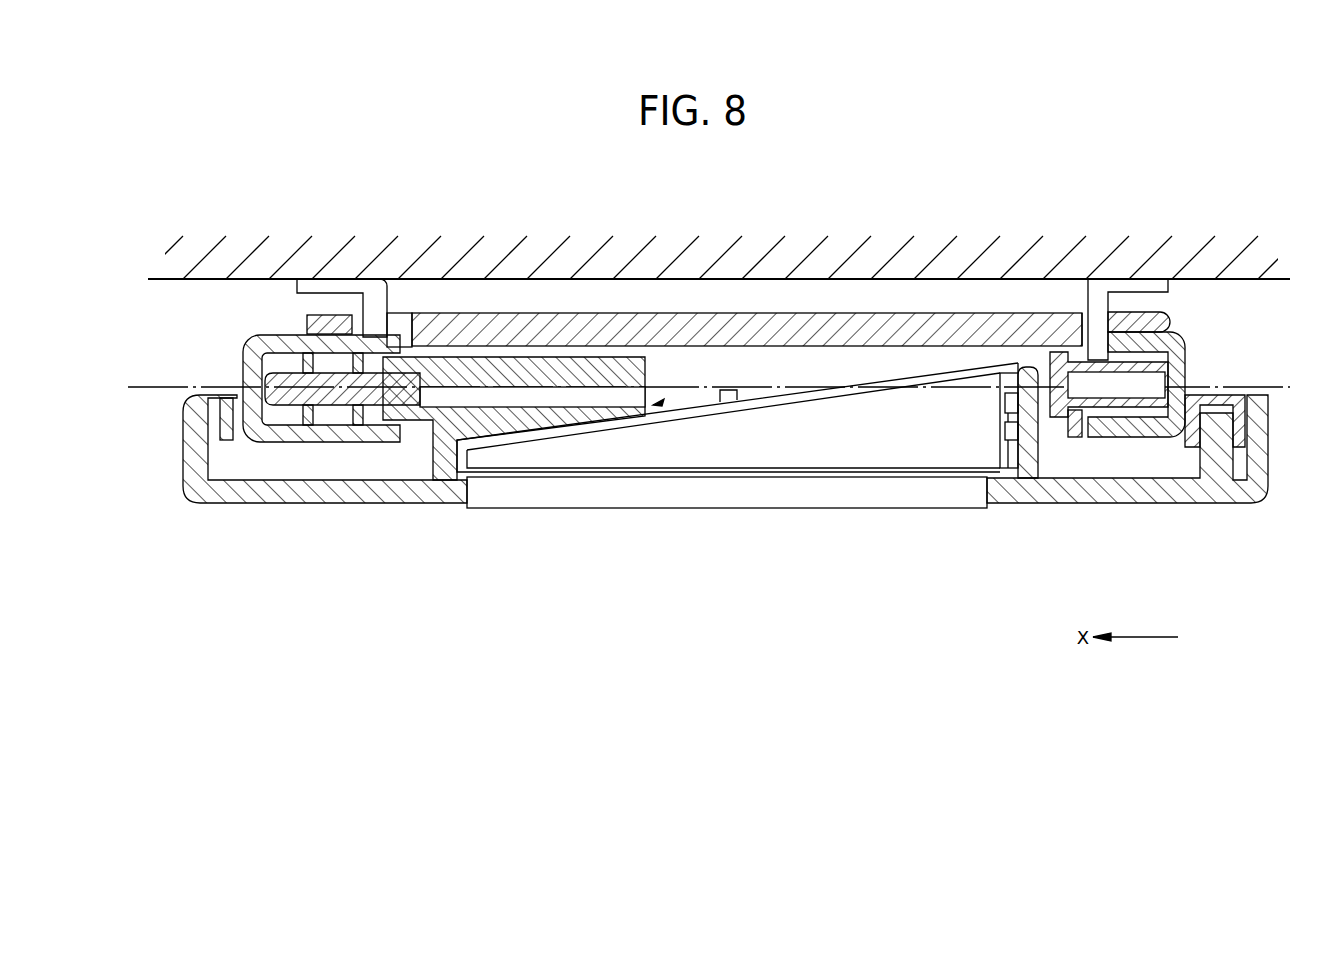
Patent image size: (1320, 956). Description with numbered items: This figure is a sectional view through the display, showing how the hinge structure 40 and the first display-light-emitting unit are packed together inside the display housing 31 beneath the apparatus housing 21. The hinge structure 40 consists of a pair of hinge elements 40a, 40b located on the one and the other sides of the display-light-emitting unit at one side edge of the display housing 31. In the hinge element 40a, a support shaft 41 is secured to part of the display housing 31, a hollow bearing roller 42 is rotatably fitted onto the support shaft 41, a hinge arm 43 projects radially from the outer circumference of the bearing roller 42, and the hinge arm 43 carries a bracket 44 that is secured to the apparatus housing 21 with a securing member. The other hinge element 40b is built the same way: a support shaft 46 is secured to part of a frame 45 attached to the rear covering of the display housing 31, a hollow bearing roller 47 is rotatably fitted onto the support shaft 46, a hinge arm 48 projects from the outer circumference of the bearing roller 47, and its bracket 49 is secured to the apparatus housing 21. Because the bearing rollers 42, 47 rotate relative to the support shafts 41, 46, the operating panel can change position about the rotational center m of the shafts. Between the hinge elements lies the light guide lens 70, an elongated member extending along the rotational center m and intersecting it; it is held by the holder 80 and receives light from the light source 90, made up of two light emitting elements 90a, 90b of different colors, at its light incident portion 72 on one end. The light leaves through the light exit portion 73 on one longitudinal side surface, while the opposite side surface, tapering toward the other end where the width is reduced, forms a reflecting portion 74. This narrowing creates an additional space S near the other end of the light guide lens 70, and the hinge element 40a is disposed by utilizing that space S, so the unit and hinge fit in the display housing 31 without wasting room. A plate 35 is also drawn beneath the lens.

The apparatus housing 21 is at (162, 283).
The display housing 31 is at (292, 503).
The bottom plate 35 is at (830, 508).
The hinge structure 40 is at (725, 446).
The hinge element 40a is at (358, 450).
The hinge element 40b is at (1100, 437).
The support shaft 41 is at (488, 367).
The bearing roller 42 is at (240, 359).
The hinge arm 43 is at (388, 302).
The bracket 44 is at (363, 294).
The frame 45 is at (600, 315).
The support shaft 46 is at (1033, 348).
The bearing roller 47 is at (1143, 430).
The hinge arm 48 is at (1082, 292).
The bracket 49 is at (1130, 283).
The light guide lens 70 is at (684, 442).
The light incident portion 72 is at (1001, 366).
The light exit portion 73 is at (753, 473).
The reflecting portion 74 is at (767, 397).
The holder 80 is at (1010, 503).
The light source 90 is at (933, 428).
The light emitting element 90a is at (1000, 432).
The light emitting element 90b is at (1000, 403).
The additional space S is at (656, 404).
The rotational center m is at (162, 390).